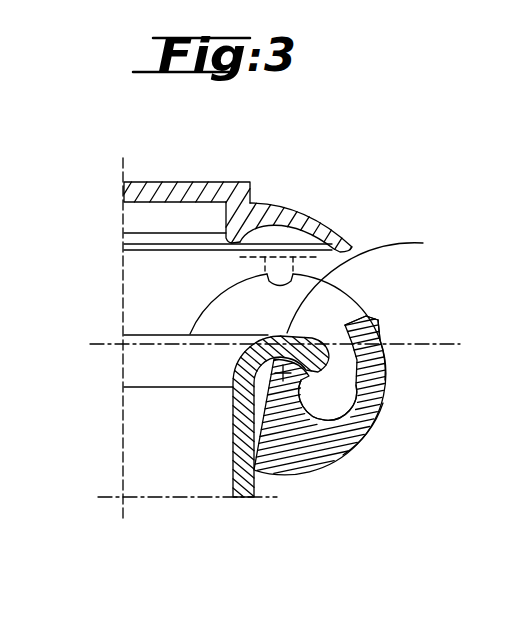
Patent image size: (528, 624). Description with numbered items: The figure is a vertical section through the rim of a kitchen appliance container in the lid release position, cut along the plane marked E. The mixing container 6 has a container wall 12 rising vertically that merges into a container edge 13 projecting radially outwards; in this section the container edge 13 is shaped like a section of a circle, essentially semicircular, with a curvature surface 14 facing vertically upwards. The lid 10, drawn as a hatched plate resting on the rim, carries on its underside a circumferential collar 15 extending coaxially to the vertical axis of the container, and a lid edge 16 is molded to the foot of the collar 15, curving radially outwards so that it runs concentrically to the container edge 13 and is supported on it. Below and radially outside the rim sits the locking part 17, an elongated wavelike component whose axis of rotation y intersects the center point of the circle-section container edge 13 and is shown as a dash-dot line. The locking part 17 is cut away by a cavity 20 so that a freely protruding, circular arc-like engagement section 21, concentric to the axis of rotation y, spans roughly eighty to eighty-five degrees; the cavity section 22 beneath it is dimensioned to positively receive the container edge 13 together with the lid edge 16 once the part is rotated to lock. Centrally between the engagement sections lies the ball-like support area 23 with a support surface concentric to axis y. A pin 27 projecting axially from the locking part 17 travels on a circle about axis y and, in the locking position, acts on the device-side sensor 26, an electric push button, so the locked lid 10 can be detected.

The mixing container 6 is at (176, 488).
The lid 10 is at (198, 166).
The container wall 12 is at (242, 498).
The container edge 13 is at (303, 350).
The curvature surface 14 is at (372, 280).
The circumferential collar 15 is at (237, 232).
The lid edge 16 is at (323, 228).
The locking part 17 is at (352, 474).
The cavity 20 is at (383, 333).
The engagement section 21 is at (384, 378).
The cavity section 22 is at (373, 423).
The support area 23 is at (337, 403).
The sensor 26 is at (291, 256).
The pin 27 is at (372, 323).
The section plane E is at (279, 347).
The axis of rotation y is at (289, 355).